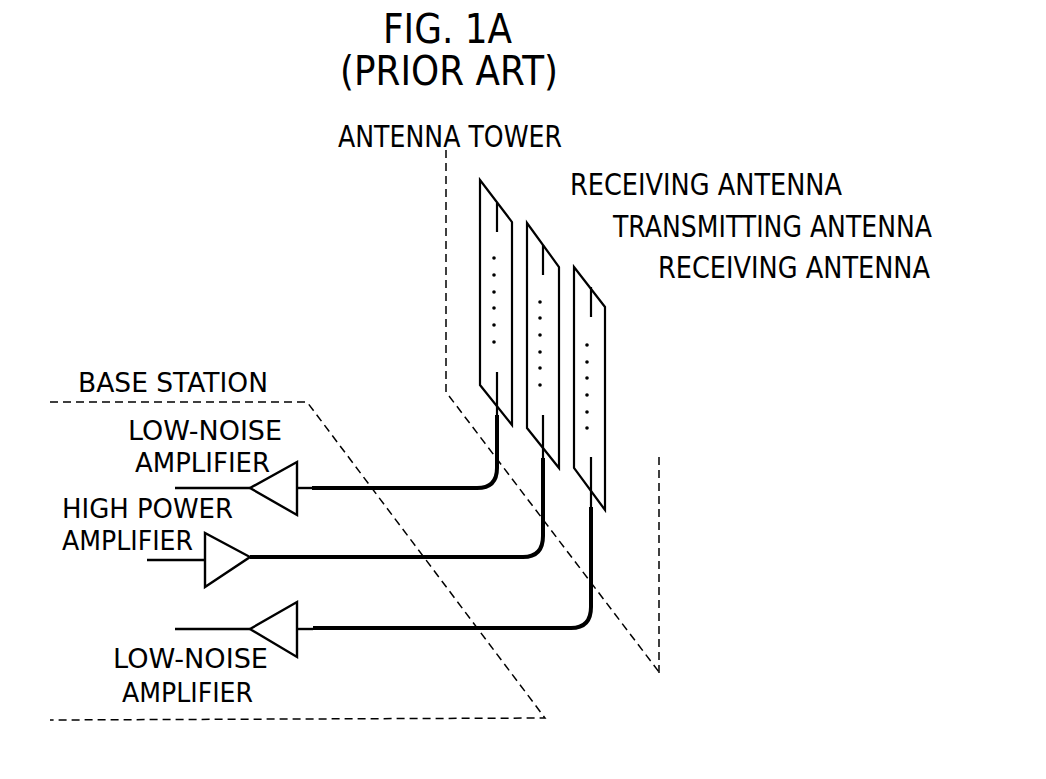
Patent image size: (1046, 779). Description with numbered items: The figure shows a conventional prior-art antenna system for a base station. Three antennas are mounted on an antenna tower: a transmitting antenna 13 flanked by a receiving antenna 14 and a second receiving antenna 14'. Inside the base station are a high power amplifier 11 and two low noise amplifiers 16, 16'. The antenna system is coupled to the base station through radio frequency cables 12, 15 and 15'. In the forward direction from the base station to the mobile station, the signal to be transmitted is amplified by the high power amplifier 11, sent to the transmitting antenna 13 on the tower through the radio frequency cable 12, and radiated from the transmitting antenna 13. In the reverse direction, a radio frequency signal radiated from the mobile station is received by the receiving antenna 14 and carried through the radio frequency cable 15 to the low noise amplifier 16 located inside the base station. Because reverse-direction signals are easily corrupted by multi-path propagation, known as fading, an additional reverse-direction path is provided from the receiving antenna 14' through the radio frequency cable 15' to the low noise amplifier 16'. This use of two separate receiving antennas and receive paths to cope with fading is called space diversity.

The receiving antenna 14' is at (521, 297).
The transmitting antenna 13 is at (550, 254).
The receiving antenna 14 is at (610, 381).
The radio frequency cable 15' is at (404, 451).
The low noise amplifier 16' is at (272, 495).
The radio frequency cable 12 is at (500, 553).
The high power amplifier 11 is at (205, 576).
The low noise amplifier 16 is at (268, 623).
The radio frequency cable 15 is at (454, 594).